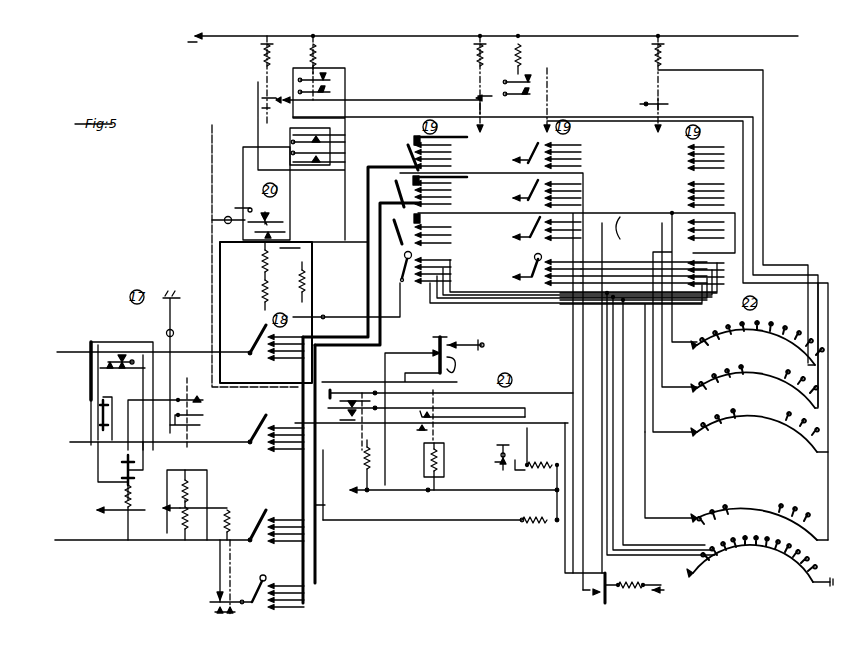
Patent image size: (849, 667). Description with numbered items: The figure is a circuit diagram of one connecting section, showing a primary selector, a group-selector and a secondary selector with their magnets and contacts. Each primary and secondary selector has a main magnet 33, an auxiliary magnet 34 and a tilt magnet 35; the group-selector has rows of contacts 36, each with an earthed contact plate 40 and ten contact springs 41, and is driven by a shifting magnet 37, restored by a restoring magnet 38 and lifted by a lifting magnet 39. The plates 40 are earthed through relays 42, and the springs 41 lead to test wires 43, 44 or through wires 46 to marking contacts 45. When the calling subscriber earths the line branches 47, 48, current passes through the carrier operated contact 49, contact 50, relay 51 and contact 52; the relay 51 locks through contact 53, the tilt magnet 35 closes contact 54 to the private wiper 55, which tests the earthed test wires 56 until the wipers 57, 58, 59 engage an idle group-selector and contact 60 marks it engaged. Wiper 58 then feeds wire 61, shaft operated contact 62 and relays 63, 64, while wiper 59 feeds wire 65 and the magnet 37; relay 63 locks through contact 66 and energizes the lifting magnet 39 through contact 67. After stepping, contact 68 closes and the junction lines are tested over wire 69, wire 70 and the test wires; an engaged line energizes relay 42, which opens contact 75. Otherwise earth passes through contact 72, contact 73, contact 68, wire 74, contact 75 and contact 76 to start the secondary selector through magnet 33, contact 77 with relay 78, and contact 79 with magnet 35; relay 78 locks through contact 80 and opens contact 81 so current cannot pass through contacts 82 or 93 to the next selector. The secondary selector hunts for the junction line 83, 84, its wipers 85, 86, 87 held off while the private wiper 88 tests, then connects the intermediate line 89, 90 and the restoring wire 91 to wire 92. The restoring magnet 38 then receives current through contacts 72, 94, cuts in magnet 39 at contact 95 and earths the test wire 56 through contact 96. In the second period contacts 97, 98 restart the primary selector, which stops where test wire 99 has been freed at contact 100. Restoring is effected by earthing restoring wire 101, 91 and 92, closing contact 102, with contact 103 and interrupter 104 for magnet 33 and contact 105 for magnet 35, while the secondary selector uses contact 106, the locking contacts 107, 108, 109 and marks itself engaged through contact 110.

The main magnet 33 is at (270, 290).
The auxiliary magnet 34 is at (270, 265).
The tilt magnet 35 is at (307, 284).
The row of contacts 36 is at (755, 455).
The shifting magnet 37 is at (537, 521).
The restoring magnet 38 is at (535, 456).
The lifting magnet 39 is at (636, 583).
The contact plate 40 is at (809, 580).
The contact spring 41 is at (707, 336).
The relay 42 is at (260, 61).
The test wire 43 is at (425, 241).
The test wire 44 is at (551, 245).
The marking contact 45 is at (700, 298).
The wire 46 is at (622, 291).
The line branch 47 is at (68, 443).
The line branch 48 is at (71, 540).
The carrier operated contact 49 is at (130, 358).
The contact 50 is at (106, 369).
The relay 51 is at (122, 510).
The contact 52 is at (205, 400).
The contact 53 is at (122, 490).
The contact 54 is at (218, 596).
The private wiper 55 is at (260, 576).
The test wire 56 is at (322, 507).
The wiper 57 is at (258, 328).
The wiper 58 is at (265, 418).
The wiper 59 is at (261, 526).
The contact 60 is at (211, 611).
The wire 61 is at (295, 423).
The shaft operated contact 62 is at (436, 355).
The relay 63 is at (371, 466).
The slow acting relay 64 is at (424, 466).
The wire 65 is at (301, 501).
The contact 66 is at (348, 420).
The contact 67 is at (340, 386).
The contact 68 is at (589, 595).
The wire 69 is at (817, 310).
The wire 70 is at (662, 365).
The contact 72 is at (465, 340).
The contact 73 is at (415, 430).
The wire 74 is at (482, 173).
The contact 75 is at (262, 110).
The contact 76 is at (338, 154).
The contact 77 is at (275, 212).
The relay 78 is at (319, 56).
The contact 79 is at (290, 216).
The contact 80 is at (334, 81).
The contact 81 is at (334, 95).
The contact 82 is at (338, 165).
The junction line 83 is at (455, 140).
The junction line 84 is at (455, 178).
The wiper 85 is at (410, 144).
The wiper 86 is at (408, 189).
The wiper 87 is at (404, 227).
The private wiper 88 is at (403, 263).
The intermediate line 89 is at (378, 262).
The intermediate line 90 is at (366, 220).
The restoring wire 91 is at (220, 329).
The wire 92 is at (625, 230).
The contact 93 is at (262, 97).
The contact 94 is at (425, 417).
The contact 95 is at (499, 461).
The contact 96 is at (454, 370).
The contact 97 is at (124, 472).
The contact 98 is at (100, 408).
The test wire 99 is at (212, 176).
The contact 100 is at (336, 130).
The restoring wire 101 is at (71, 352).
The contact 102 is at (105, 342).
The contact 103 is at (185, 364).
The interrupter 104 is at (210, 222).
The contact 105 is at (203, 419).
The contact 106 is at (240, 209).
The contact 107 is at (296, 254).
The contact 108 is at (289, 231).
The contact 109 is at (336, 142).
The contact 110 is at (246, 242).